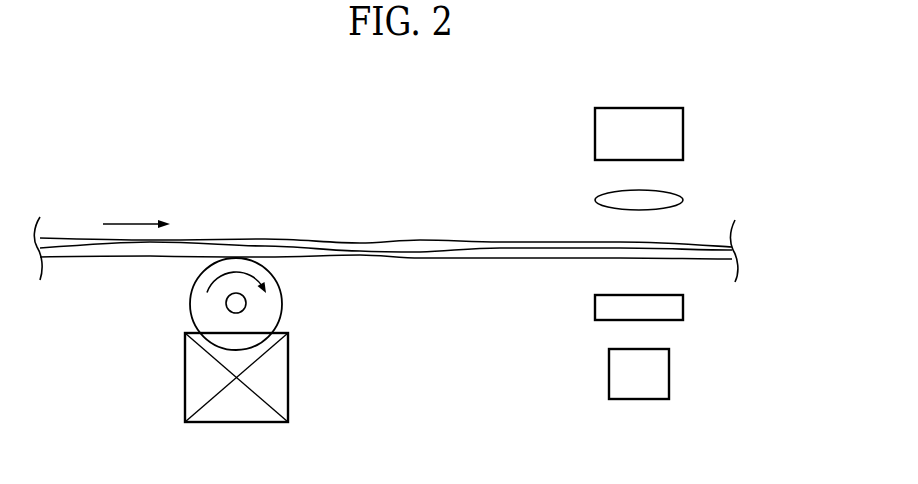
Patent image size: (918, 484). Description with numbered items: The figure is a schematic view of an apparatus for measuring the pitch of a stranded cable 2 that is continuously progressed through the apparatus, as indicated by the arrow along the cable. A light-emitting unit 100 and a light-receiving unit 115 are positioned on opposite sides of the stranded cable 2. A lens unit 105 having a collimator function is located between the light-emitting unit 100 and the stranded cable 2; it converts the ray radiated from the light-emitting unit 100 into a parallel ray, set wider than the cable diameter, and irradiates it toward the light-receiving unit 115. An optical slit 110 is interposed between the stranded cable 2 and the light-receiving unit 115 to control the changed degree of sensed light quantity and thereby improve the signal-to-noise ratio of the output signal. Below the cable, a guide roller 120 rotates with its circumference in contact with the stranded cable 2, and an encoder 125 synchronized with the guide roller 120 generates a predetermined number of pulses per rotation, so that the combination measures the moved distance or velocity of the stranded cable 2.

The stranded cable 2 is at (504, 243).
The light-emitting unit 100 is at (683, 133).
The lens unit 105 is at (683, 200).
The optical slit 110 is at (683, 307).
The light-receiving unit 115 is at (669, 374).
The guide roller 120 is at (282, 303).
The encoder 125 is at (288, 372).